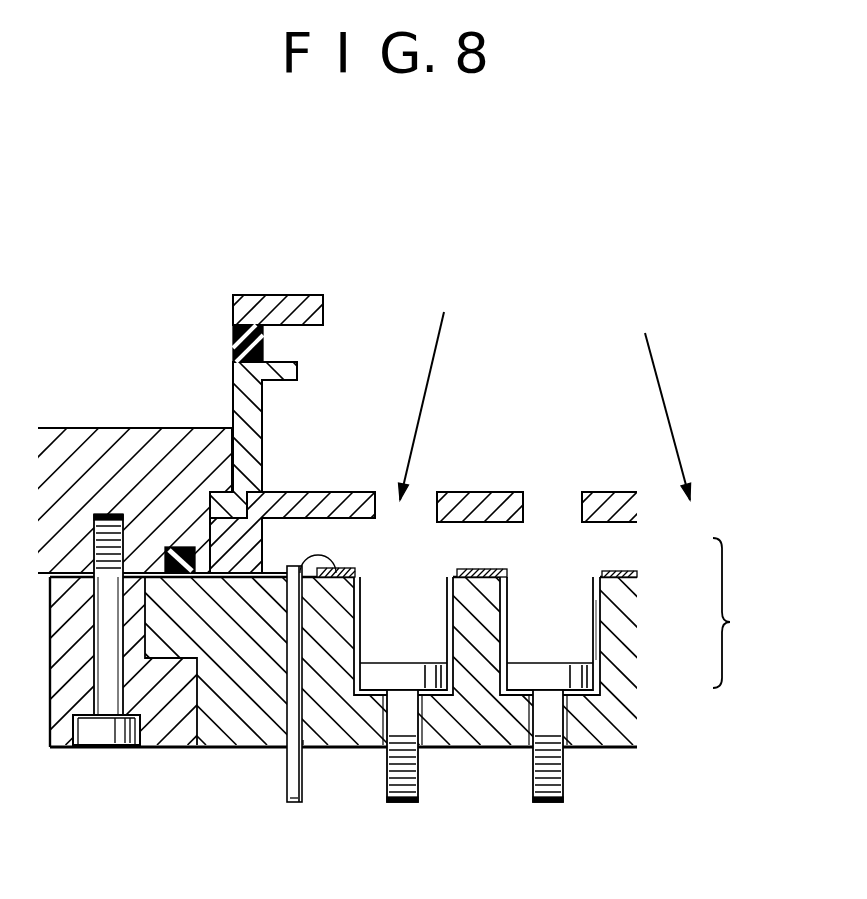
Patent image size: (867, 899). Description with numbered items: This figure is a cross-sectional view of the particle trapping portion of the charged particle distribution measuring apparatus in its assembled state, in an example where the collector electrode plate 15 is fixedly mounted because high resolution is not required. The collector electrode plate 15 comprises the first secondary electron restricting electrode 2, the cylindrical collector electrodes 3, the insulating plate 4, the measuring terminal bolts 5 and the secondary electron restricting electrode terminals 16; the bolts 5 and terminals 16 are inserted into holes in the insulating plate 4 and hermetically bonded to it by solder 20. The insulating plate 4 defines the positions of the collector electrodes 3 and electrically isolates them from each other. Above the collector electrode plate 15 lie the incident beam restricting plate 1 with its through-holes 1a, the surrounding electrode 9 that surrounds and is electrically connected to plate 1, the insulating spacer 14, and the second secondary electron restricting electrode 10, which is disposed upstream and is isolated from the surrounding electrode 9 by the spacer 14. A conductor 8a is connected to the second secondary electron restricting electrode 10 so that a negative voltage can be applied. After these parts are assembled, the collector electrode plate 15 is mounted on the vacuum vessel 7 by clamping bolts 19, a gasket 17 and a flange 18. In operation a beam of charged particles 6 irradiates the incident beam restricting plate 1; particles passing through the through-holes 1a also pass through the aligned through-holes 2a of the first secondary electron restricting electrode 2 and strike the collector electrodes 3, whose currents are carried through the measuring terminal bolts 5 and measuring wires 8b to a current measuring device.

The incident beam restricting plate 1 is at (317, 492).
The through-holes 1a is at (377, 492).
The first secondary electron restricting electrode 2 is at (492, 572).
The through-holes 2a is at (355, 575).
The collector electrodes 3 is at (608, 613).
The insulating plate 4 is at (622, 630).
The measuring terminal bolts 5 is at (600, 677).
The beam of charged particles 6 is at (642, 410).
The vacuum vessel 7 is at (167, 443).
The conductor 8a is at (295, 802).
The measuring wires 8b is at (400, 802).
The surrounding electrode 9 is at (262, 410).
The second secondary electron restricting electrode 10 is at (323, 305).
The insulating spacer 14 is at (263, 350).
The collector electrode plate 15 is at (740, 613).
The secondary electron restricting electrode terminals 16 is at (288, 768).
The gasket 17 is at (197, 547).
The flange 18 is at (168, 737).
The clamping bolts 19 is at (100, 733).
The solder 20 is at (305, 748).